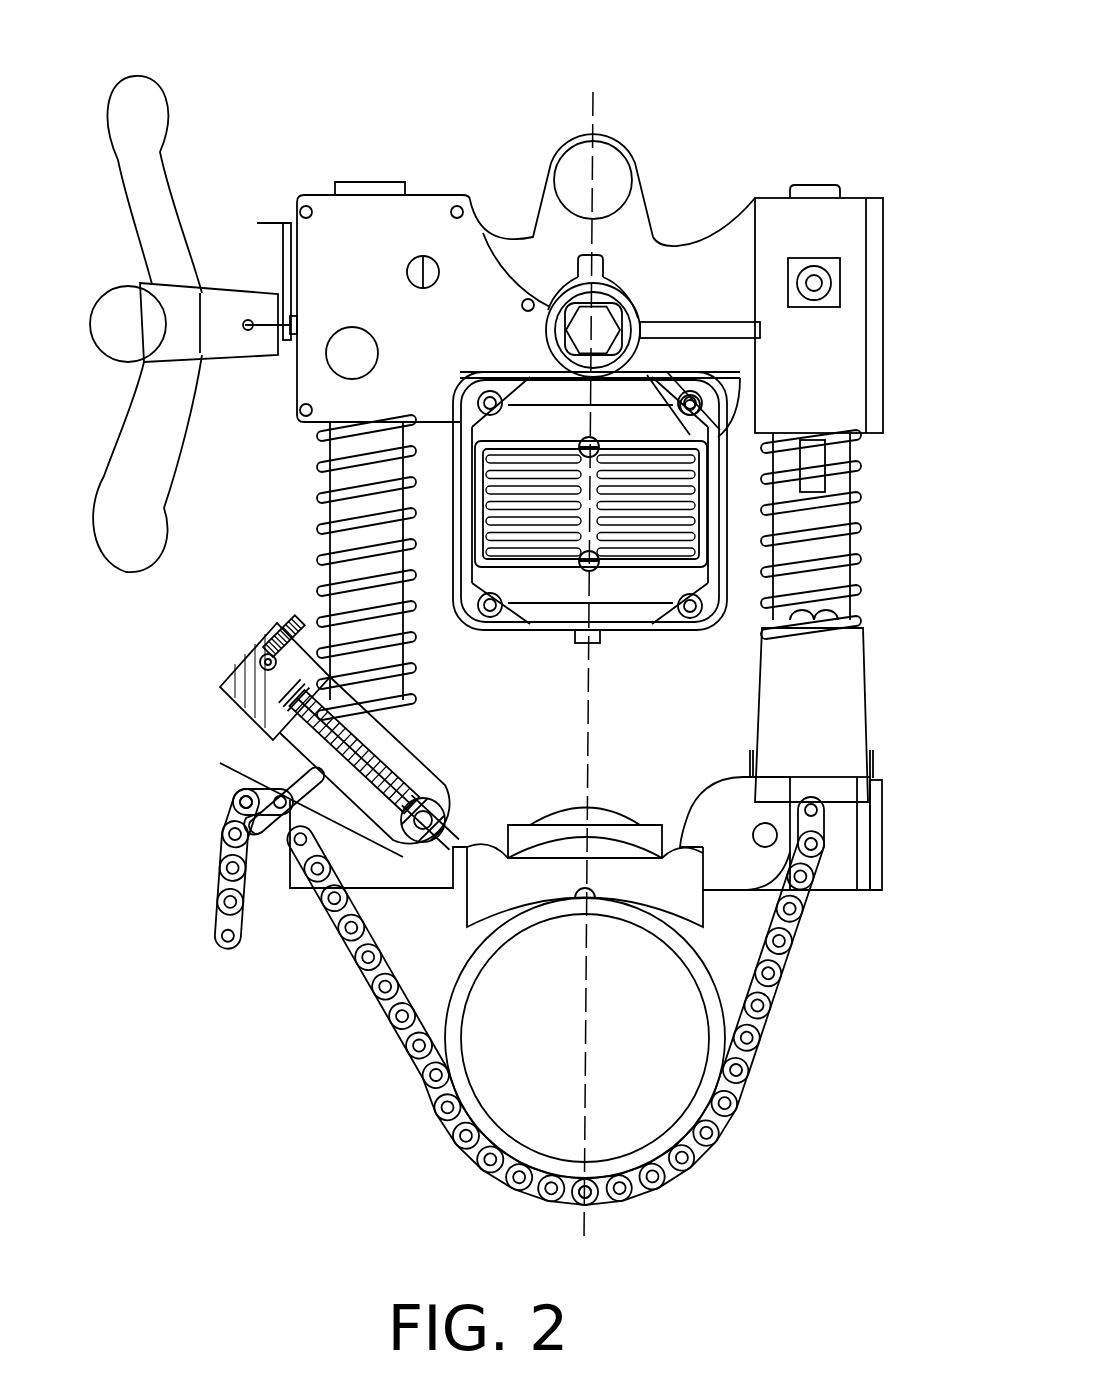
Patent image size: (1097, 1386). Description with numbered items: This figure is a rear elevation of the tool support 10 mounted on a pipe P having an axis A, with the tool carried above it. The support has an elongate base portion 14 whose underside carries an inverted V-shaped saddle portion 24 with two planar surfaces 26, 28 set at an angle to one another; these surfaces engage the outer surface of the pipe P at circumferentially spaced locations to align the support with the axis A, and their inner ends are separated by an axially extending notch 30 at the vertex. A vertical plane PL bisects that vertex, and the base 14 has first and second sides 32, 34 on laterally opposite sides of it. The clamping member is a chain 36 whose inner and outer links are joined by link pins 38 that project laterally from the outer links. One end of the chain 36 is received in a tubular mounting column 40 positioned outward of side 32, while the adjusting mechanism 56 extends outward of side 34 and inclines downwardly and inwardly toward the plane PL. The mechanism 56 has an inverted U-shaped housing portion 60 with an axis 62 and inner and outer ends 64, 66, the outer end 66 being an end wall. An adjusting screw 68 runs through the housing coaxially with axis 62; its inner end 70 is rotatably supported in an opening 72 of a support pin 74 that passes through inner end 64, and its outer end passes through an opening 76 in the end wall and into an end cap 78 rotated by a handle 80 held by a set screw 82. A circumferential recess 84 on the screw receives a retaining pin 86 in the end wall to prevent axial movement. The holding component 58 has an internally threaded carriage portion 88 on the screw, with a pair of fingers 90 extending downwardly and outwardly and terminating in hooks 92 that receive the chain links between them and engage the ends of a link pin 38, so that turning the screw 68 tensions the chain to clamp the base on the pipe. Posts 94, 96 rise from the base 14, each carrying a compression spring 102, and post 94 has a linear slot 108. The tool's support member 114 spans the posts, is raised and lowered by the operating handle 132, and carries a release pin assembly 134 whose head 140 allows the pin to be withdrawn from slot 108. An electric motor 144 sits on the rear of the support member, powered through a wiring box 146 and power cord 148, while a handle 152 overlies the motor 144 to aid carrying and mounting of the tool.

The tool support 10 is at (352, 1147).
The base portion 14 is at (626, 808).
The saddle portion 24 is at (456, 940).
The planar surface 26 is at (634, 913).
The planar surface 28 is at (535, 910).
The notch 30 is at (583, 903).
The first side 32 is at (708, 912).
The second side 34 is at (461, 907).
The chain 36 is at (521, 1026).
The link pins 38 is at (440, 1122).
The tubular mounting column 40 is at (868, 670).
The clamping member adjusting mechanism 56 is at (332, 762).
The holding component 58 is at (287, 743).
The housing portion 60 is at (378, 707).
The axis 62 is at (257, 633).
The inner end 64 is at (418, 873).
The outer end 66 is at (287, 718).
The adjusting screw 68 is at (427, 783).
The inner end 70 is at (450, 823).
The opening 72 is at (447, 807).
The support pin 74 is at (402, 843).
The opening 76 is at (240, 717).
The end cap 78 is at (225, 690).
The handle 80 is at (258, 645).
The set screw 82 is at (283, 618).
The circumferential recess 84 is at (332, 698).
The retaining pin 86 is at (270, 698).
The carriage portion 88 is at (384, 735).
The fingers 90 is at (317, 780).
The hooks 92 is at (256, 836).
The post 94 is at (815, 186).
The post 96 is at (368, 180).
The compression spring 102 is at (320, 528).
The slot 108 is at (812, 452).
The support member 114 is at (720, 232).
The operating handle 132 is at (160, 78).
The release pin assembly 134 is at (846, 253).
The head 140 is at (838, 277).
The electric motor 144 is at (655, 636).
The wiring box 146 is at (441, 193).
The power cord 148 is at (380, 351).
The handle 152 is at (577, 130).
The vertical plane PL is at (598, 105).
The pipe axis A is at (585, 1100).
The pipe P is at (730, 1048).